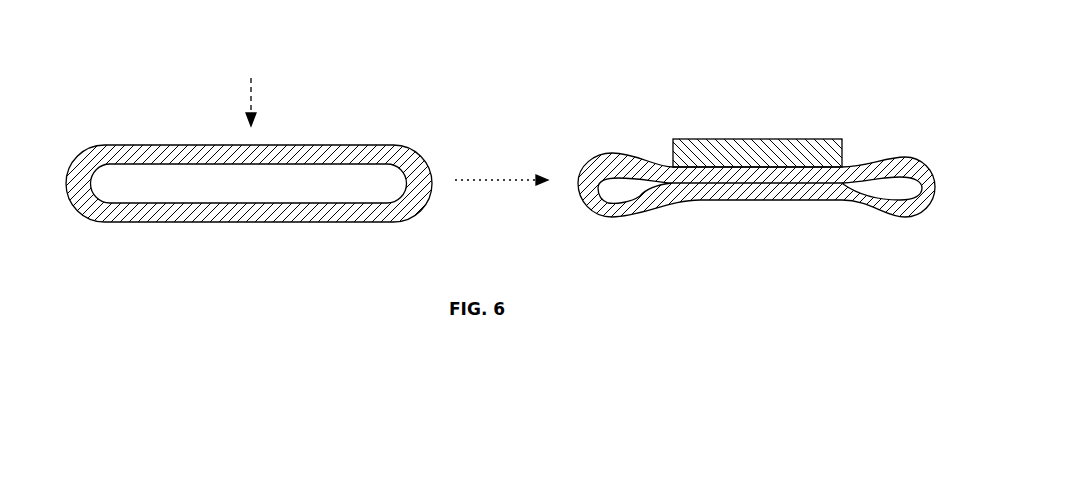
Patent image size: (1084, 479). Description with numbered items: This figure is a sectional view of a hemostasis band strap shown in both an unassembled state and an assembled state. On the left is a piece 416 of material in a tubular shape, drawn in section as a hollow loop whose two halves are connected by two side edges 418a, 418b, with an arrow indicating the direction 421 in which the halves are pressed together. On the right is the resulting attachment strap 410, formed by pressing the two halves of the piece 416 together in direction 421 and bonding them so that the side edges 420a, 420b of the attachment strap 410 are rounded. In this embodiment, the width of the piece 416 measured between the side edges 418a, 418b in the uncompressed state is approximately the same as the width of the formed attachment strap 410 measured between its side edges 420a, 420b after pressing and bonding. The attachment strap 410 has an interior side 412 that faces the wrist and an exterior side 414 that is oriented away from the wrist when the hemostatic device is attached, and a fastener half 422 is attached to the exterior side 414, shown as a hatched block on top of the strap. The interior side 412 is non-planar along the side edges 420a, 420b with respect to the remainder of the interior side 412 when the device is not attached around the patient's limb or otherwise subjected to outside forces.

The attachment strap 410 is at (568, 98).
The interior side 412 is at (784, 210).
The exterior side 414 is at (849, 157).
The piece of material 416 is at (178, 219).
The side edge 418a is at (66, 183).
The side edge 418b is at (433, 183).
The side edge 420a is at (566, 184).
The side edge 420b is at (950, 184).
The direction 421 is at (254, 95).
The fastener half 422 is at (750, 155).